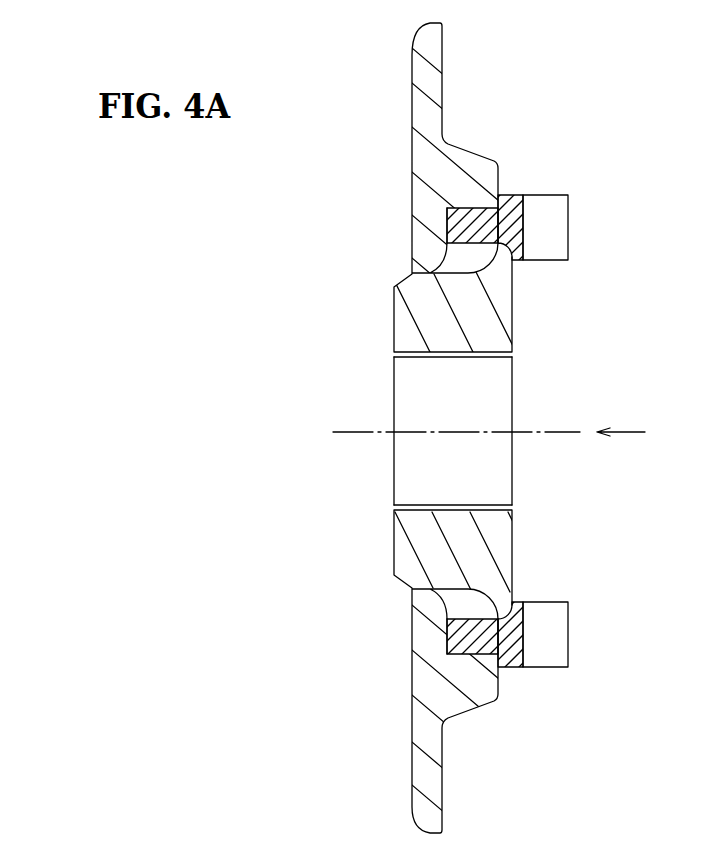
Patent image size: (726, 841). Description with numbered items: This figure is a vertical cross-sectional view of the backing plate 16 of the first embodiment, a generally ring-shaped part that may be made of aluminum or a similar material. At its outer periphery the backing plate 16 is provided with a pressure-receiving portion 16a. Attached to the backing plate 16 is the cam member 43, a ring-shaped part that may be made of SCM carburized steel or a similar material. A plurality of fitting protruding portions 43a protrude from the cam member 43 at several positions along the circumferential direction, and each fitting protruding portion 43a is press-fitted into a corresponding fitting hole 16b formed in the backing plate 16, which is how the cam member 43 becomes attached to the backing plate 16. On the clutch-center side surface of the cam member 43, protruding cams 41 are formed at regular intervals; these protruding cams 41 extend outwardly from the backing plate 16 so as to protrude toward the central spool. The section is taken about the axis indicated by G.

The backing plate 16 is at (430, 427).
The pressure-receiving portion 16a is at (430, 67).
The fitting hole 16b is at (446, 219).
The protruding cam 41 is at (550, 228).
The cam member 43 is at (448, 396).
The fitting protruding portion 43a is at (445, 267).
The axis direction G is at (621, 420).